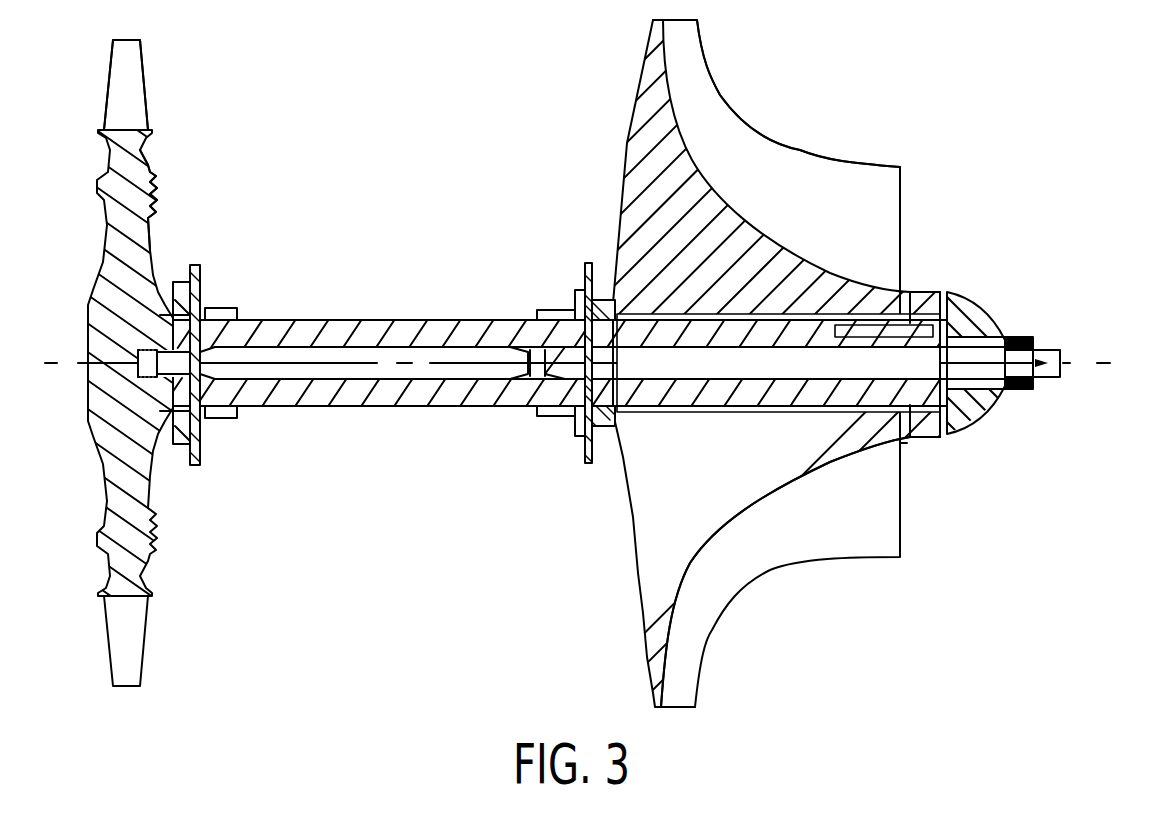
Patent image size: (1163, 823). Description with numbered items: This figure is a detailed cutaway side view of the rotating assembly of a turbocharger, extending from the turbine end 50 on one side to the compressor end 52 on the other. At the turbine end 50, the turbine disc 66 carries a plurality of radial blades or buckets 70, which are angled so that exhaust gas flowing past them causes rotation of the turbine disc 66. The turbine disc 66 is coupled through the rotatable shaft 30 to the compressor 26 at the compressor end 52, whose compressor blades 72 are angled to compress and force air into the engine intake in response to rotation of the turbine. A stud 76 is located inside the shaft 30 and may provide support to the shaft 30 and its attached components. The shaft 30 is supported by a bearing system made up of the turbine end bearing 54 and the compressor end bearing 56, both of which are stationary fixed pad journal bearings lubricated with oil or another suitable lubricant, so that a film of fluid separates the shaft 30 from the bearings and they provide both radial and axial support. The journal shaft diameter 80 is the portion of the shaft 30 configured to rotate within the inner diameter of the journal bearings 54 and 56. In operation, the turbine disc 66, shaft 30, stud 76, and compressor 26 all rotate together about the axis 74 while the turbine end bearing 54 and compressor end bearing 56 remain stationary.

The compressor 26 is at (863, 440).
The shaft 30 is at (420, 398).
The turbine end 50 is at (164, 704).
The compressor end 52 is at (740, 692).
The turbine end bearing 54 is at (203, 300).
The compressor end bearing 56 is at (580, 310).
The turbine disc 66 is at (133, 167).
The buckets 70 is at (133, 82).
The compressor blades 72 is at (782, 160).
The axis 74 is at (1068, 372).
The stud 76 is at (247, 370).
The journal shaft diameter 80 is at (470, 265).